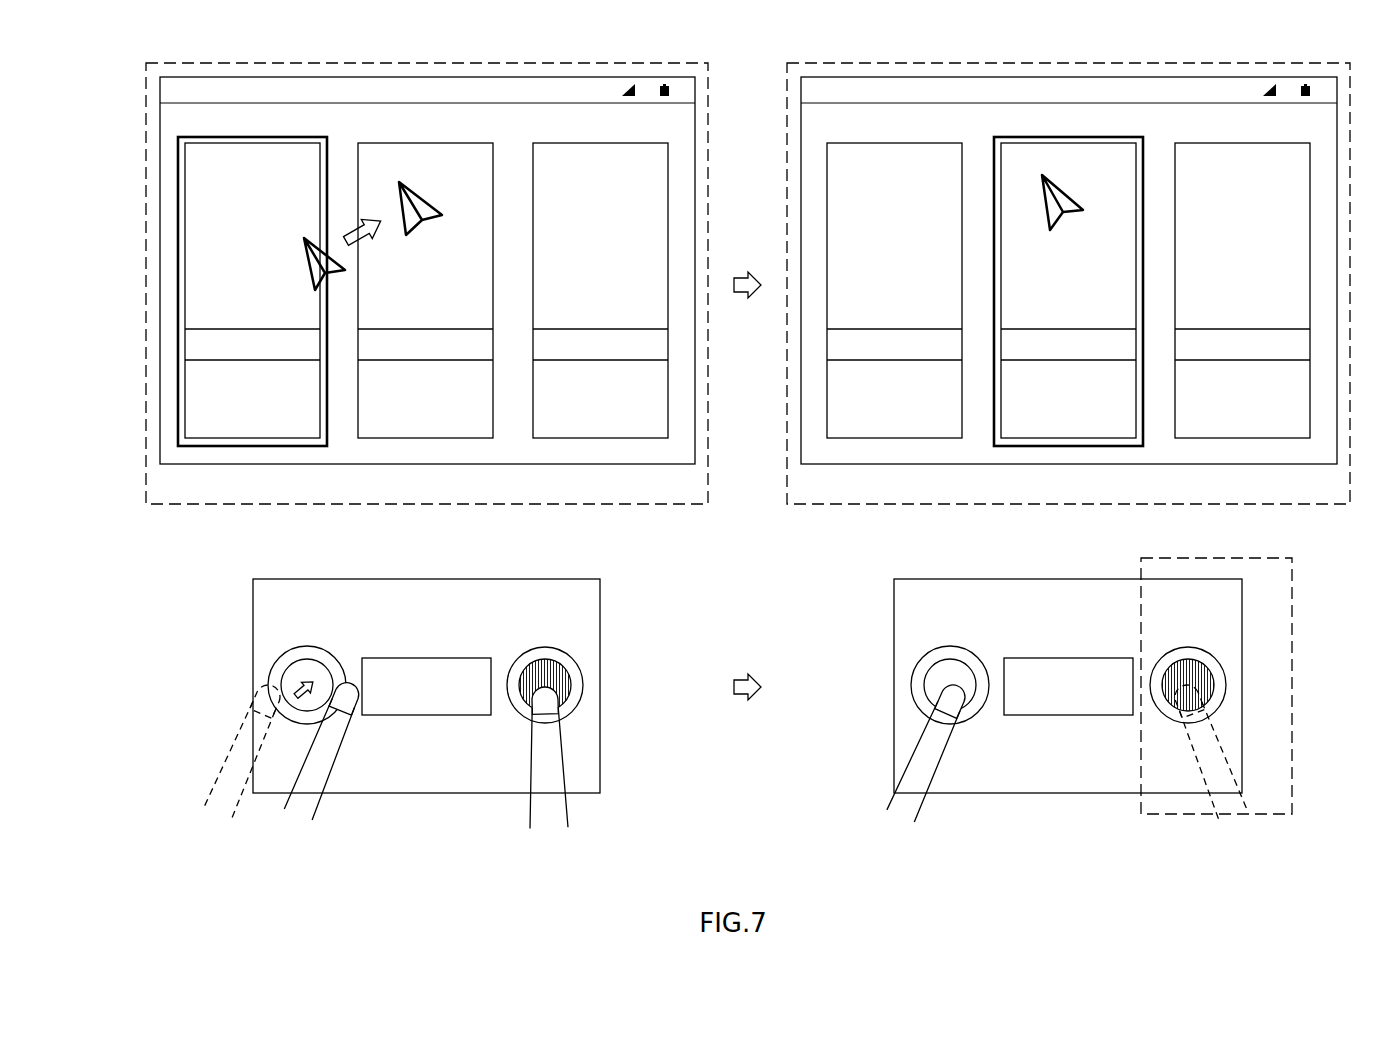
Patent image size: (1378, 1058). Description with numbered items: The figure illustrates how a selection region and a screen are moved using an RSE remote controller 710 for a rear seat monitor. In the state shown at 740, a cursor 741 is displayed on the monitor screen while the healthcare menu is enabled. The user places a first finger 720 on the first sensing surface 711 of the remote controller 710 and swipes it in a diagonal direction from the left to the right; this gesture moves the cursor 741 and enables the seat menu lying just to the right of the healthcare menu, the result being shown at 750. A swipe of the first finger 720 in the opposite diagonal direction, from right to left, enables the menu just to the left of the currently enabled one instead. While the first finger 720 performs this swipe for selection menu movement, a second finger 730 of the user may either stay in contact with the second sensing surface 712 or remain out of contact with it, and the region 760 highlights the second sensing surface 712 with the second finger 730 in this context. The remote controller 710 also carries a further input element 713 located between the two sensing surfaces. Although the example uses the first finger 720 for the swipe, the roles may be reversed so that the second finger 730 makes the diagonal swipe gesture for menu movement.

The input device 710 is at (425, 578).
The first sensing surface 711 is at (306, 646).
The second sensing surface 712 is at (545, 646).
The third input unit 713 is at (425, 657).
The first finger 720 is at (237, 755).
The second finger 730 is at (550, 752).
The cursor movement state 740 is at (424, 62).
The cursor 741 is at (304, 238).
The menu enabled state 750 is at (1067, 62).
The click region 760 is at (1293, 685).